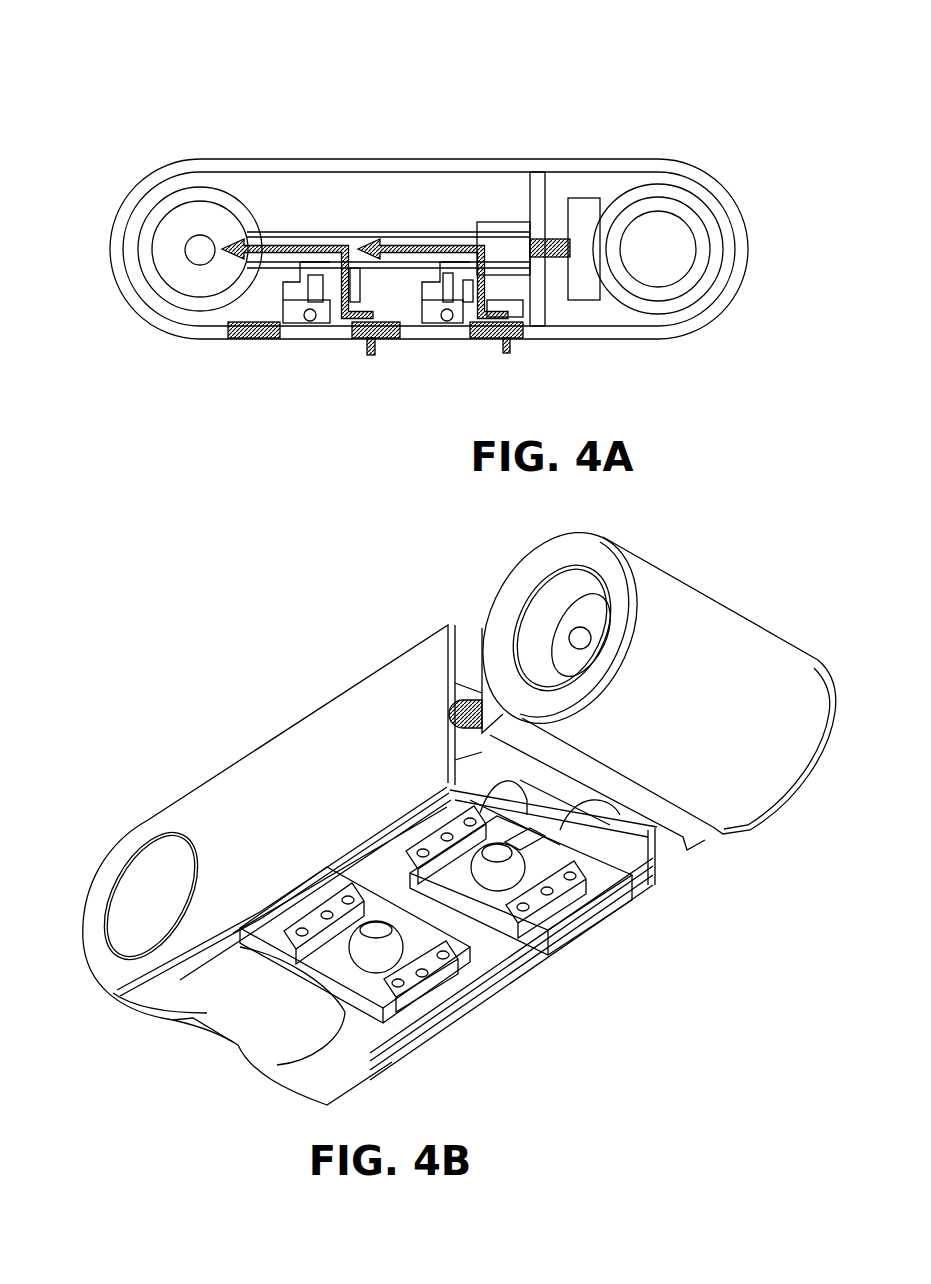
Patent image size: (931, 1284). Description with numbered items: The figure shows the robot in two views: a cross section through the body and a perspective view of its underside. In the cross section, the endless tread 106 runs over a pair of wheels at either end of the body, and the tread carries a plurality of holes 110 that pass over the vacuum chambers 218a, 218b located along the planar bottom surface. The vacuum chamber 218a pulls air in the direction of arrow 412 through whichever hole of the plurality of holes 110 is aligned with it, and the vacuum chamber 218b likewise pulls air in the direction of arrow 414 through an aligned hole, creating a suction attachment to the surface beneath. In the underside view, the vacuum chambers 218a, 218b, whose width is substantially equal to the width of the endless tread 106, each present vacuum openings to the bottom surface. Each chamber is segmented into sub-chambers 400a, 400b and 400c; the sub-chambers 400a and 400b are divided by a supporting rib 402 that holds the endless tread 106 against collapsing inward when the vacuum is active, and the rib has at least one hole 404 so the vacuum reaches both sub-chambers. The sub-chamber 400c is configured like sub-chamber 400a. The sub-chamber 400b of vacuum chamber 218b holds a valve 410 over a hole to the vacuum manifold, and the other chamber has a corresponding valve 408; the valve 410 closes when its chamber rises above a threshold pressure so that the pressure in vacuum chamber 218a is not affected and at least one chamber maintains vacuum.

In FIG. 4A, the endless tread 106 is at (289, 330).
In FIG. 4A, the plurality of holes 110 is at (248, 336).
In FIG. 4A, the arrow 412 is at (247, 240).
In FIG. 4A, the arrow 414 is at (367, 240).
In FIG. 4A, the vacuum chamber 218a is at (300, 316).
In FIG. 4B, the vacuum chamber 218a is at (478, 1033).
In FIG. 4A, the vacuum chamber 218b is at (460, 308).
In FIG. 4B, the vacuum chamber 218b is at (615, 956).
In FIG. 4A, the valve 408 is at (337, 313).
In FIG. 4B, the valve 408 is at (380, 953).
In FIG. 4A, the valve 410 is at (472, 313).
In FIG. 4B, the valve 410 is at (500, 878).
In FIG. 4B, the supporting rib 402 is at (430, 837).
In FIG. 4B, the hole 404 is at (413, 848).
In FIG. 4B, the sub-chamber 400a is at (447, 815).
In FIG. 4B, the sub-chamber 400b is at (525, 852).
In FIG. 4B, the sub-chamber 400c is at (590, 898).